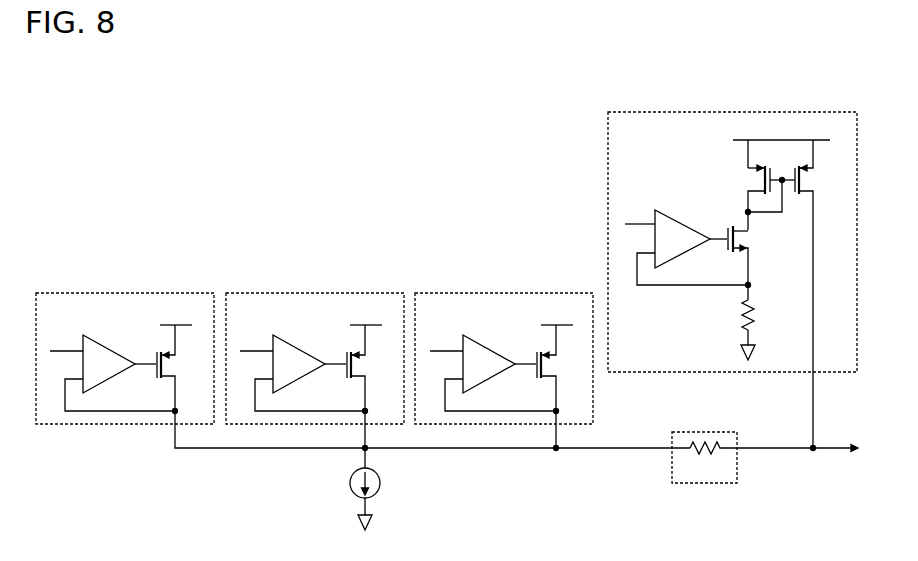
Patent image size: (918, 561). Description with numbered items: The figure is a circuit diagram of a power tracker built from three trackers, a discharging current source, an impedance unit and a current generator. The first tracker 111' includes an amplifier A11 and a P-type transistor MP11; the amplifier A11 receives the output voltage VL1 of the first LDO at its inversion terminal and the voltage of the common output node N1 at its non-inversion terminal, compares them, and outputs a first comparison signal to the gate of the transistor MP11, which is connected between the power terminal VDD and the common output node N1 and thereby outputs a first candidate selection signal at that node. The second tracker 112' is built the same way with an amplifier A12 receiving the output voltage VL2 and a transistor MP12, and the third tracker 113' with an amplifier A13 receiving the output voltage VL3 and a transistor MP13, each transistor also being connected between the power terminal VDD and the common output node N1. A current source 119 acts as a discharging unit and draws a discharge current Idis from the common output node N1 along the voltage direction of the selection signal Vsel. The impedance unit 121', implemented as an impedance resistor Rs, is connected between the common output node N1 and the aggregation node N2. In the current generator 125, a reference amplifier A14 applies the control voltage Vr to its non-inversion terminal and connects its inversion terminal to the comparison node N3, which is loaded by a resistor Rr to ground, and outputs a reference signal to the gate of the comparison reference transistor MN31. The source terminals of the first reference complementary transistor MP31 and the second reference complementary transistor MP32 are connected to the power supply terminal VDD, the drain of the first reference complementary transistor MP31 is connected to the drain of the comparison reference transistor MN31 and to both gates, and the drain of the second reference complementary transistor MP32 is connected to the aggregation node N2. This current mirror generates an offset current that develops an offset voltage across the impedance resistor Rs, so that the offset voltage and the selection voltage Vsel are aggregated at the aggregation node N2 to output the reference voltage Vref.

The first tracker 111' is at (128, 344).
The second tracker 112' is at (318, 344).
The third tracker 113' is at (507, 344).
The current source 119 is at (375, 489).
The impedance unit 121' is at (714, 442).
The current generator 125 is at (830, 112).
The amplifier A11 is at (117, 349).
The amplifier A12 is at (307, 349).
The amplifier A13 is at (497, 349).
The reference amplifier A14 is at (689, 222).
The transistor MP11 is at (171, 368).
The transistor MP12 is at (361, 368).
The transistor MP13 is at (552, 368).
The first reference complementary transistor MP31 is at (757, 197).
The second reference complementary transistor MP32 is at (820, 294).
The comparison reference transistor MN31 is at (745, 263).
The common output node N1 is at (556, 451).
The aggregation node N2 is at (813, 451).
The comparison node N3 is at (752, 285).
The impedance resistor Rs is at (706, 458).
The reference resistor Rr is at (740, 315).
The output voltage VL1 is at (65, 343).
The output voltage VL2 is at (255, 343).
The output voltage VL3 is at (445, 343).
The control voltage Vr is at (640, 216).
The selection signal Vsel is at (604, 438).
The reference voltage Vref is at (878, 449).
The discharge current Idis is at (337, 484).
The power terminal VDD is at (176, 316).